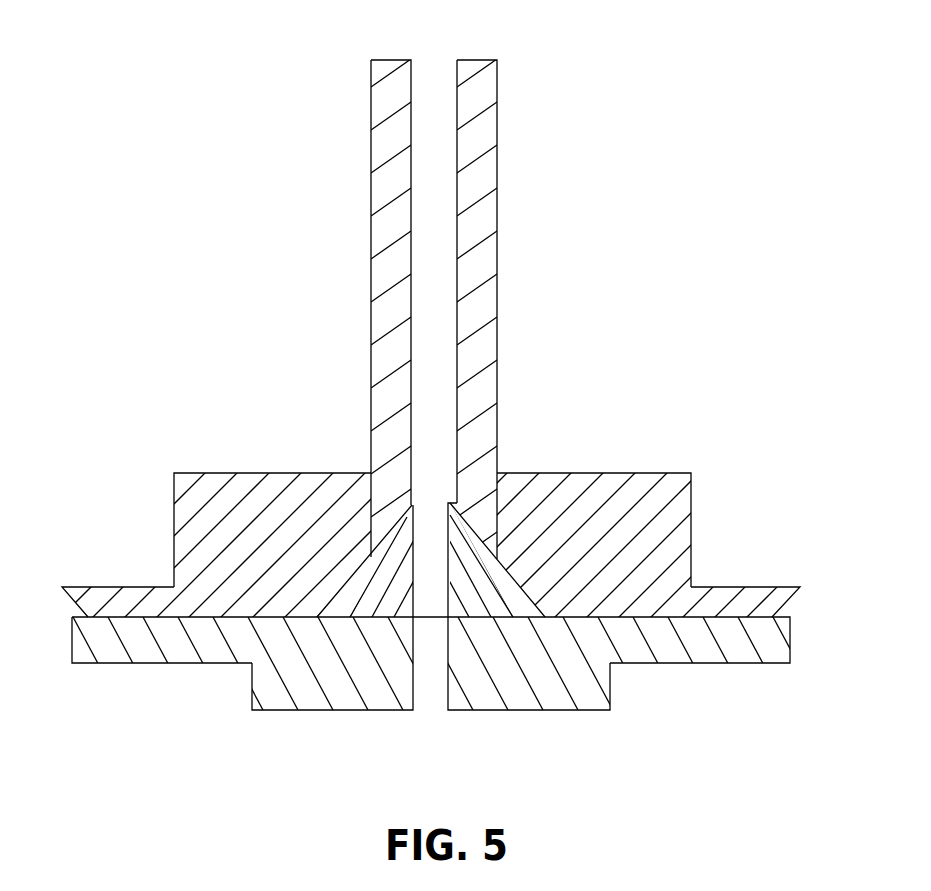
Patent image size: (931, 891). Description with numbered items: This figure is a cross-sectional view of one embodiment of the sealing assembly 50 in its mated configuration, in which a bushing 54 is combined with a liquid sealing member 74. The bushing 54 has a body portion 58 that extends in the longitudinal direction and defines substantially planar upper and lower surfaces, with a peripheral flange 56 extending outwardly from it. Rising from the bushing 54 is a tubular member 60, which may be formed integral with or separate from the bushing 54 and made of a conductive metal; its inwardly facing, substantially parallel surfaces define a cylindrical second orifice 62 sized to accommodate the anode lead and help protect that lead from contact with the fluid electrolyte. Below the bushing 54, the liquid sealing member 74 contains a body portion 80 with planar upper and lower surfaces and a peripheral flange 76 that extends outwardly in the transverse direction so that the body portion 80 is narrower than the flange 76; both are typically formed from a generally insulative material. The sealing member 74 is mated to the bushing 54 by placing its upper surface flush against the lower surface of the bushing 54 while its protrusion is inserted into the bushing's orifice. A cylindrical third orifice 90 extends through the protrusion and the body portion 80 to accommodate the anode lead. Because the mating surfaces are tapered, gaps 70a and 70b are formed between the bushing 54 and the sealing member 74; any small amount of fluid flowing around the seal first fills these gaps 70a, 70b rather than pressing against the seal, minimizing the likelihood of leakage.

The sealing assembly 50 is at (757, 208).
The bushing 54 is at (206, 444).
The peripheral flange 56 is at (98, 597).
The body portion 58 is at (640, 485).
The tubular member 60 is at (478, 217).
The second orifice 62 is at (429, 66).
The gap 70a is at (350, 596).
The gap 70b is at (513, 580).
The liquid sealing member 74 is at (263, 730).
The peripheral flange 76 is at (107, 652).
The body portion 80 is at (547, 693).
The third orifice 90 is at (431, 684).